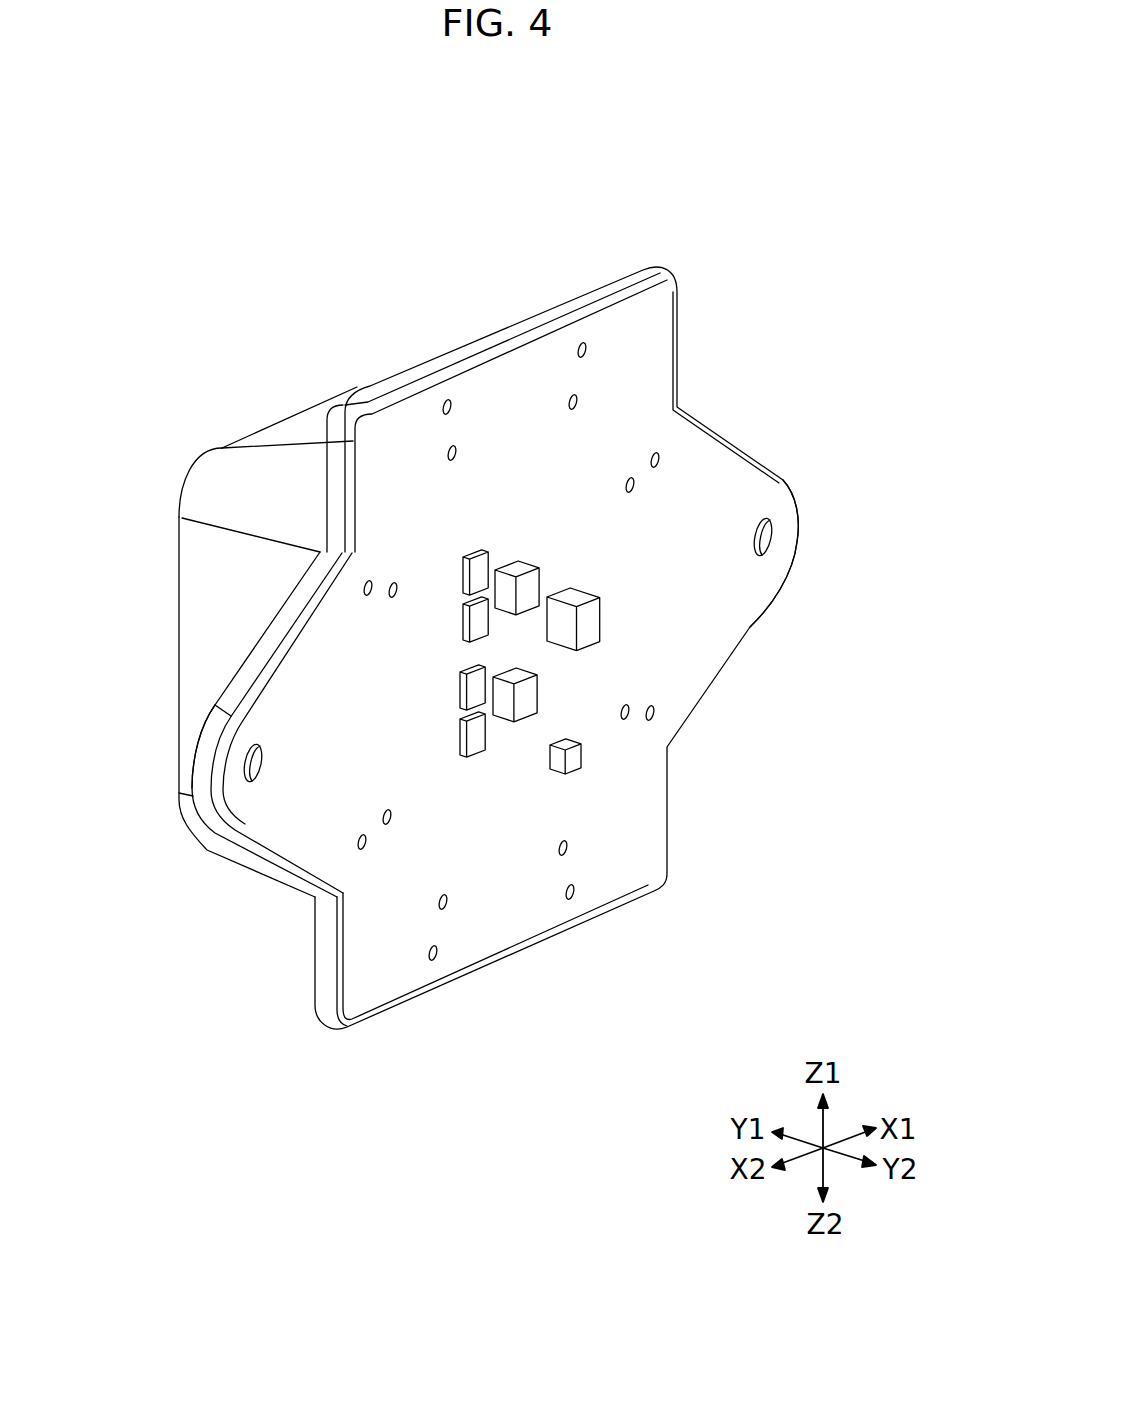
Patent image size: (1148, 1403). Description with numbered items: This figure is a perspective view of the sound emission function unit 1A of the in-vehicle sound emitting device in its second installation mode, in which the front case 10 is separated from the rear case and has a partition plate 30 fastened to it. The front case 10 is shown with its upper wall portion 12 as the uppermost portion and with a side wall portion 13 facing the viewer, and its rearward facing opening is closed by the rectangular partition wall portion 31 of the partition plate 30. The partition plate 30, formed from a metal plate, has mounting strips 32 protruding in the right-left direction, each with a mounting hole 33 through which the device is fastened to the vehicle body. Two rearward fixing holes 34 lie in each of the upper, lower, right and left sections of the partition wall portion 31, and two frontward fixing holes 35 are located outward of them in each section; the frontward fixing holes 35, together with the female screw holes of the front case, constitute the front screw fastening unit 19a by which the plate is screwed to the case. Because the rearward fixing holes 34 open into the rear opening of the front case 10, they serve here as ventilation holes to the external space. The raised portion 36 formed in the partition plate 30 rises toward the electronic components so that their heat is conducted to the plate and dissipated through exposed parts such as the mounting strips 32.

The sound emission function unit 1A is at (646, 215).
The front case 10 is at (178, 620).
The upper wall portion 12 is at (307, 423).
The side wall portion 13 is at (198, 682).
The partition plate 30 is at (726, 428).
The partition wall portion 31 is at (627, 847).
The mounting strip 32 is at (763, 493).
The mounting hole 33 is at (765, 538).
The rearward fixing hole 34 is at (573, 406).
The frontward fixing hole 35 is at (449, 400).
The front screw fastening unit 19a is at (658, 463).
The raised portion 36 is at (475, 742).